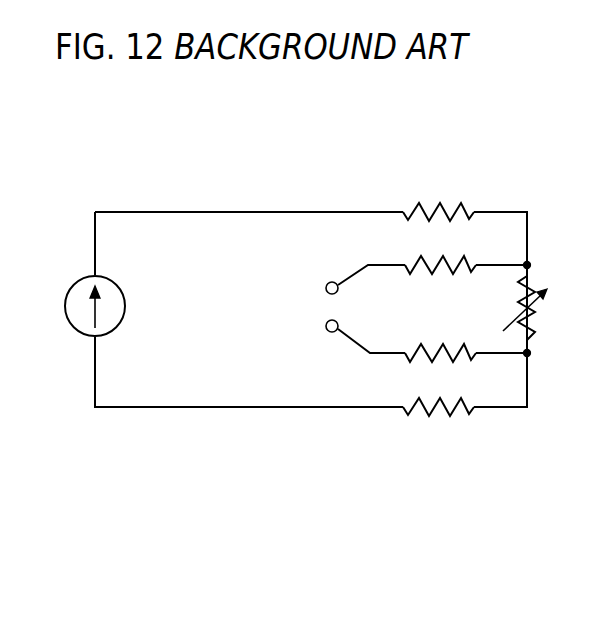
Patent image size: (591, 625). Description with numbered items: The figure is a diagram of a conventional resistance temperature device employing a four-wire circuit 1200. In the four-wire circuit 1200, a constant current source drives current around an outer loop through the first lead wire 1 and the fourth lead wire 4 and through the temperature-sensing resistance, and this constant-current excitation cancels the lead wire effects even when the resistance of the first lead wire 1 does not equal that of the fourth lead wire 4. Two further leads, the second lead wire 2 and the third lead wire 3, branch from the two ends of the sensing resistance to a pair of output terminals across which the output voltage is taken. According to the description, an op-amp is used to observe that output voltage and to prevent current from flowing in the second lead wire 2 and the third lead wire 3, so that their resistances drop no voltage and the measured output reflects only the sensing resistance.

The 4-wire circuit 1200 is at (315, 365).
The lead wire L1 1 is at (438, 225).
The lead wire L2 2 is at (440, 278).
The lead wire L3 3 is at (440, 364).
The lead wire L4 4 is at (438, 419).